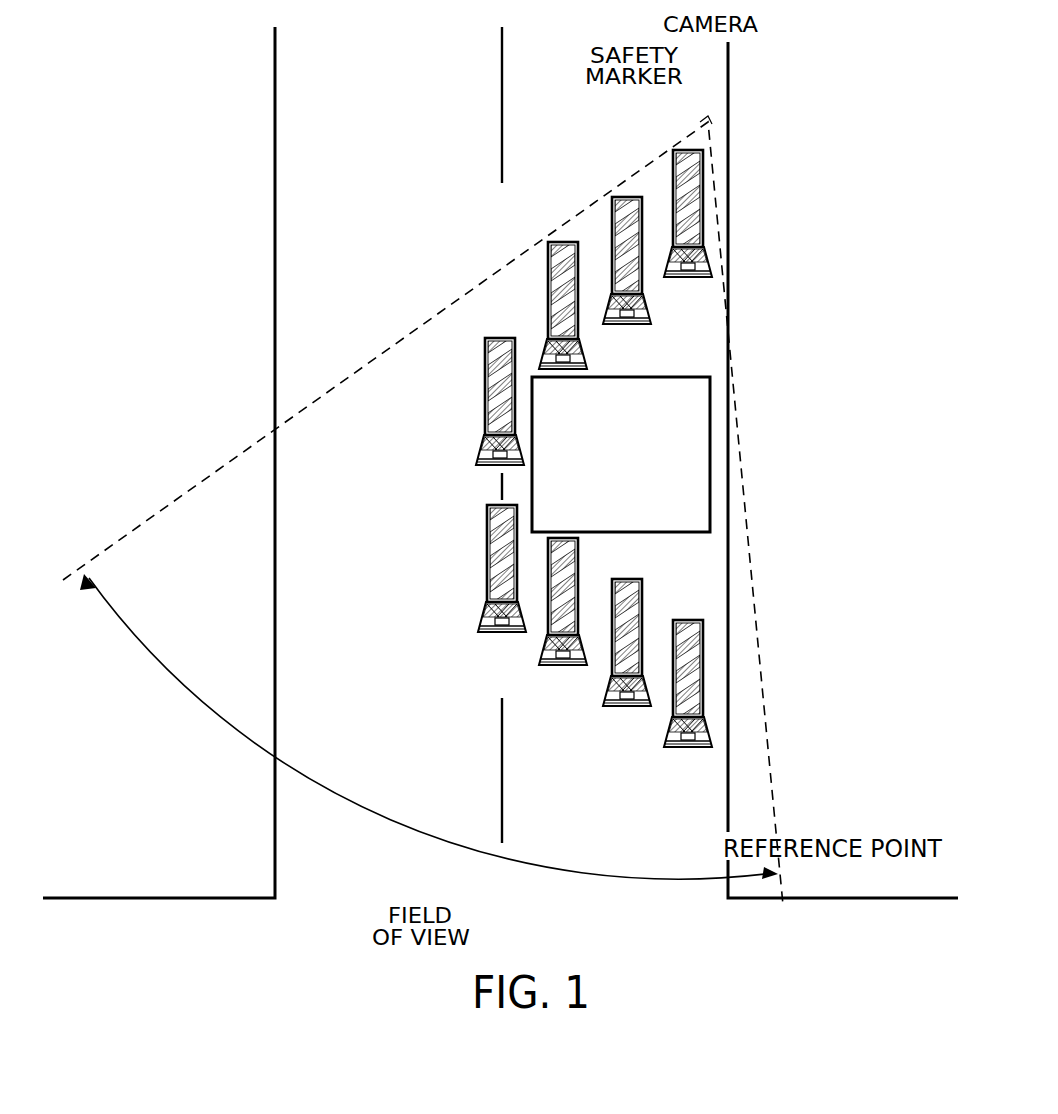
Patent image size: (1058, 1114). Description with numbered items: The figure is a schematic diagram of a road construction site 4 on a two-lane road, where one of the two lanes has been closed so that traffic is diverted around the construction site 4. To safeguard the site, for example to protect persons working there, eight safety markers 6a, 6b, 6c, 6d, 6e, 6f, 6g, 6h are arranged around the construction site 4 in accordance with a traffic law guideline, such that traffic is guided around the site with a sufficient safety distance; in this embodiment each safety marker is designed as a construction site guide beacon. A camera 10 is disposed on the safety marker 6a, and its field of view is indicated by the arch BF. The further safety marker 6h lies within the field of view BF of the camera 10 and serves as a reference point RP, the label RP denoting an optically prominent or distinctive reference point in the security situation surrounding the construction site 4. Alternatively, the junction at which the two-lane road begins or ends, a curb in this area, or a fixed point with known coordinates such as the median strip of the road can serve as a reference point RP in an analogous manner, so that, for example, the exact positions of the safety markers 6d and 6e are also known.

The camera 10 is at (690, 118).
The construction site 4 is at (642, 376).
The safety marker 6a is at (688, 148).
The safety marker 6b is at (625, 195).
The safety marker 6c is at (560, 240).
The safety marker 6d is at (500, 337).
The safety marker 6e is at (500, 634).
The safety marker 6f is at (562, 666).
The safety marker 6g is at (622, 708).
The safety marker 6h is at (688, 750).
The field of view BF is at (447, 840).
The reference point RP is at (686, 770).